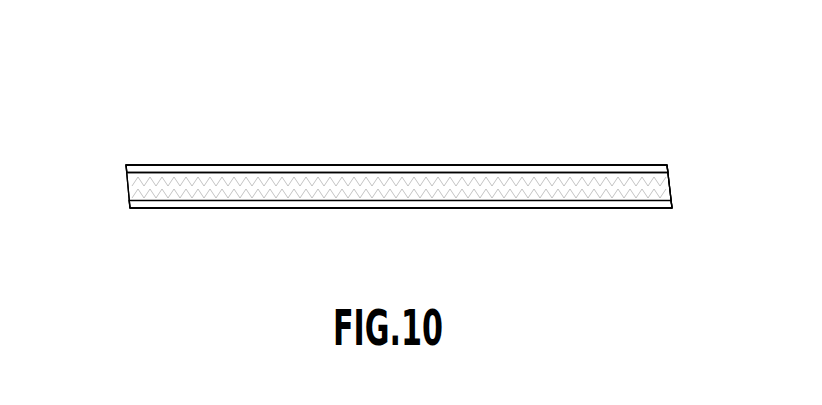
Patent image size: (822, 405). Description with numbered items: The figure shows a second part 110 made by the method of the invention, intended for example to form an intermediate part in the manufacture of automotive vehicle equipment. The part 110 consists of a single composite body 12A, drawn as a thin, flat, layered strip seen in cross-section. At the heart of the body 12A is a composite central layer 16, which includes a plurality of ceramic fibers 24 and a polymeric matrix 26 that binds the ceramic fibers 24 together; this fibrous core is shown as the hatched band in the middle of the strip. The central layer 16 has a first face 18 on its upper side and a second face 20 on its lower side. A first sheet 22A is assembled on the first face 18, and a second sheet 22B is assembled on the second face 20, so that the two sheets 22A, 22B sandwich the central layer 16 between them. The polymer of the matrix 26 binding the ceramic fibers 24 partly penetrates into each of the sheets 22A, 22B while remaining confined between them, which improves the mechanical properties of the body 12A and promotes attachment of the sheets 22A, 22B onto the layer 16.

The second part 110 is at (565, 130).
The composite body 12A is at (677, 183).
The composite central layer 16 is at (140, 190).
The first face 18 is at (260, 165).
The second face 20 is at (170, 212).
The first sheet 22A is at (437, 165).
The second sheet 22B is at (502, 210).
The ceramic fibers 24 is at (271, 185).
The polymeric matrix 26 is at (349, 185).